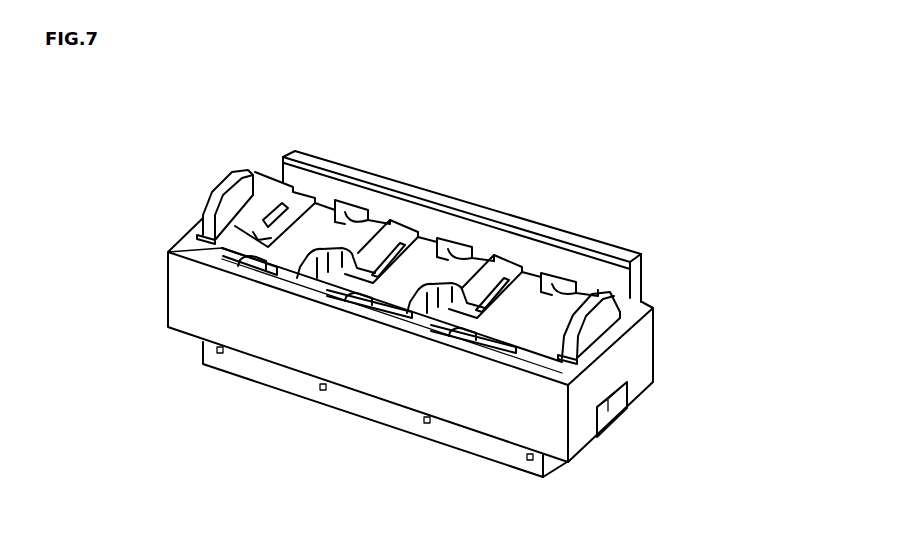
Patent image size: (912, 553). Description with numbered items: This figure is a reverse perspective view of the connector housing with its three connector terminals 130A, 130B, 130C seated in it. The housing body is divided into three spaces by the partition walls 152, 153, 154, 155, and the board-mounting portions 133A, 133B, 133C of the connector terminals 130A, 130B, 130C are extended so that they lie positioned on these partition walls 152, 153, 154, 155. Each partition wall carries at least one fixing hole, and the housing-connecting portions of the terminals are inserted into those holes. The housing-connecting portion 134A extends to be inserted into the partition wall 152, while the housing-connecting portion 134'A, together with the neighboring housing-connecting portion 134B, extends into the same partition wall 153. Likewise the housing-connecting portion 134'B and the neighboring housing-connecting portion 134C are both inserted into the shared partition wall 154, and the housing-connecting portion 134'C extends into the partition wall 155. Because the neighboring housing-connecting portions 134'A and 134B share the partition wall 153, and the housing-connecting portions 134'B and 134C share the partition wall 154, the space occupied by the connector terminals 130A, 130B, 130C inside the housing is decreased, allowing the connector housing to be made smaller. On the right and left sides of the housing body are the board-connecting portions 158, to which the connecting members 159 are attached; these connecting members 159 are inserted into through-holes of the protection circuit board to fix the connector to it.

The partition wall 152 is at (566, 388).
The partition wall 153 is at (418, 325).
The partition wall 154 is at (313, 290).
The partition wall 155 is at (263, 228).
The board-connecting portion 158 is at (635, 368).
The connecting member 159 is at (603, 320).
The connector terminal 130A is at (587, 254).
The connector terminal 130B is at (464, 215).
The connector terminal 130C is at (308, 179).
The board-mounting portion 133A is at (528, 290).
The board-mounting portion 133B is at (418, 262).
The board-mounting portion 133C is at (307, 228).
The housing-connecting portion 134A is at (590, 288).
The housing-connecting portion 134B is at (482, 263).
The housing-connecting portion 134C is at (363, 225).
The housing-connecting portion 134'A is at (428, 384).
The housing-connecting portion 134'B is at (314, 348).
The housing-connecting portion 134'C is at (166, 256).